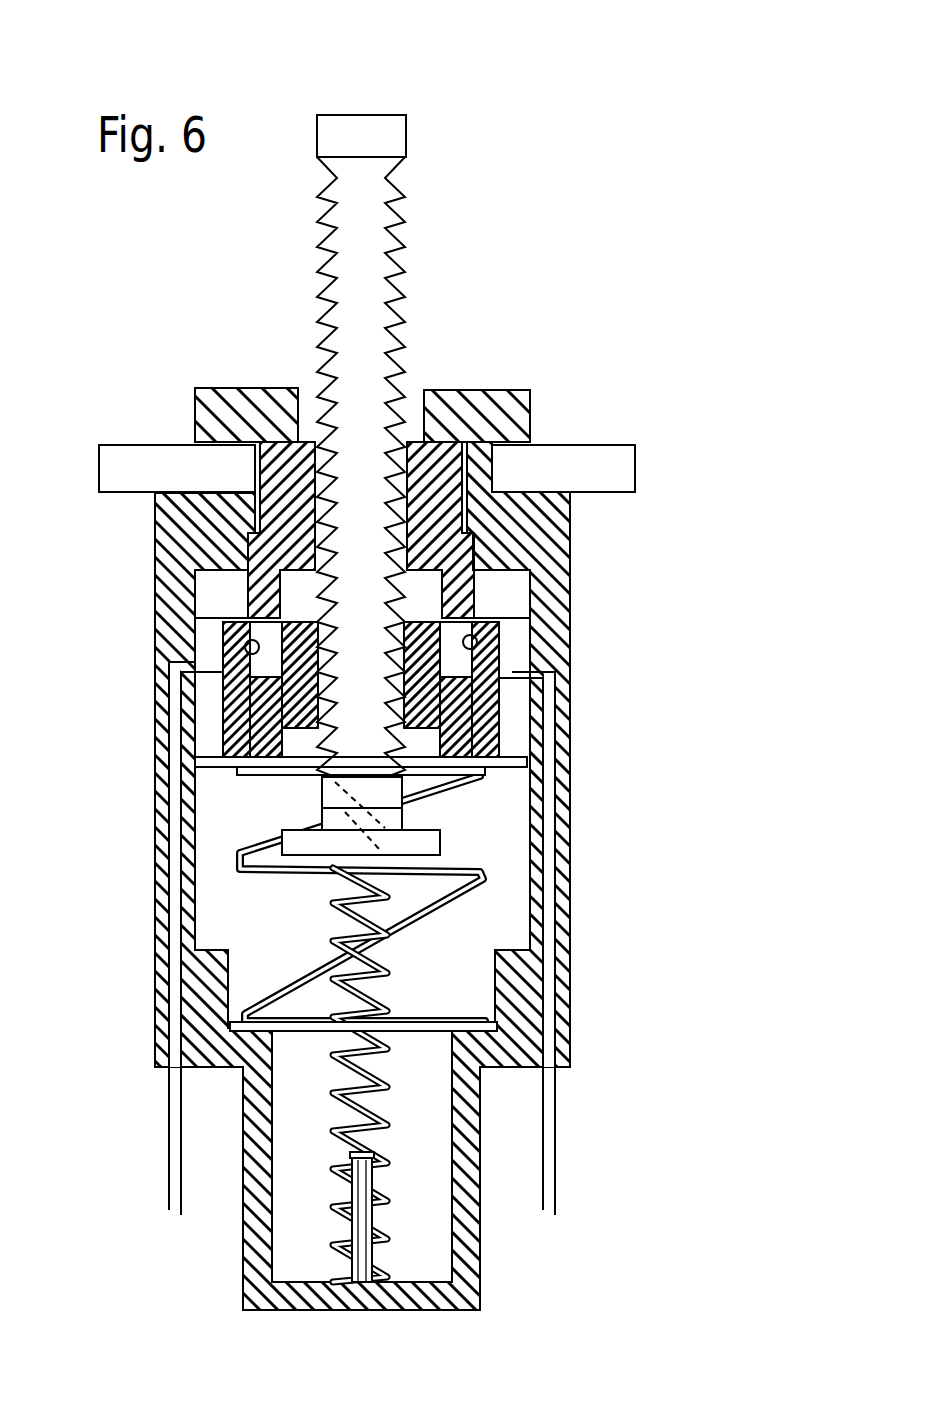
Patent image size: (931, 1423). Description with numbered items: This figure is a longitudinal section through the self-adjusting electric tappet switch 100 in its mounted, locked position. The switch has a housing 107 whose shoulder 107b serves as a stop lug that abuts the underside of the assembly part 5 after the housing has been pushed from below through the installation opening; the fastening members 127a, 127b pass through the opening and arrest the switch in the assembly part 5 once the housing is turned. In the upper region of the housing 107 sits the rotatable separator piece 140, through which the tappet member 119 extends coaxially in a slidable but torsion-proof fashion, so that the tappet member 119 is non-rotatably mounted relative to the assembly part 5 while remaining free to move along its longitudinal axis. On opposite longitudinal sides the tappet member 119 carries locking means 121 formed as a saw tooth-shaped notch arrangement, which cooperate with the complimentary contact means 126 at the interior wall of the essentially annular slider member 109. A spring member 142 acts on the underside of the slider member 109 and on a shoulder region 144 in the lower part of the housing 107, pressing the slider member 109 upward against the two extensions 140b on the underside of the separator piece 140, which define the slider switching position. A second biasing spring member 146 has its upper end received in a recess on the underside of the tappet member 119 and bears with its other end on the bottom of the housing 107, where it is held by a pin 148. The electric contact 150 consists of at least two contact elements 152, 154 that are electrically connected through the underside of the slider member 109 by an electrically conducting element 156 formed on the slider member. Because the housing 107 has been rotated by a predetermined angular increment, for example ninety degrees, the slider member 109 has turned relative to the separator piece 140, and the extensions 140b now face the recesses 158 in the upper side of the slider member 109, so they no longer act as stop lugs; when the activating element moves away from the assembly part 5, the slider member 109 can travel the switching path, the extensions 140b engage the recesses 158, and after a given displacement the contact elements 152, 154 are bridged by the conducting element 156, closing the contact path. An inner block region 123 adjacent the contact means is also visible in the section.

The tappet switch 100 is at (465, 661).
The assembly part 5 is at (578, 452).
The housing 107 is at (553, 542).
The shoulder 107b is at (183, 486).
The slider member 109 is at (262, 765).
The tappet member 119 is at (361, 445).
The locking means 121 is at (410, 294).
The inner contact block 123 is at (500, 700).
The complimentary contact means 126 is at (250, 636).
The fastening member 127a is at (250, 390).
The fastening member 127b is at (487, 390).
The separator piece 140 is at (436, 398).
The extensions 140b is at (245, 595).
The spring member 142 is at (452, 870).
The shoulder region 144 is at (472, 1020).
The second biasing spring member 146 is at (377, 1157).
The pin 148 is at (362, 1220).
The electric contact 150 is at (204, 727).
The contact element 152 is at (190, 700).
The contact element 154 is at (520, 675).
The electrically conducting element 156 is at (205, 752).
The recesses 158 is at (245, 650).